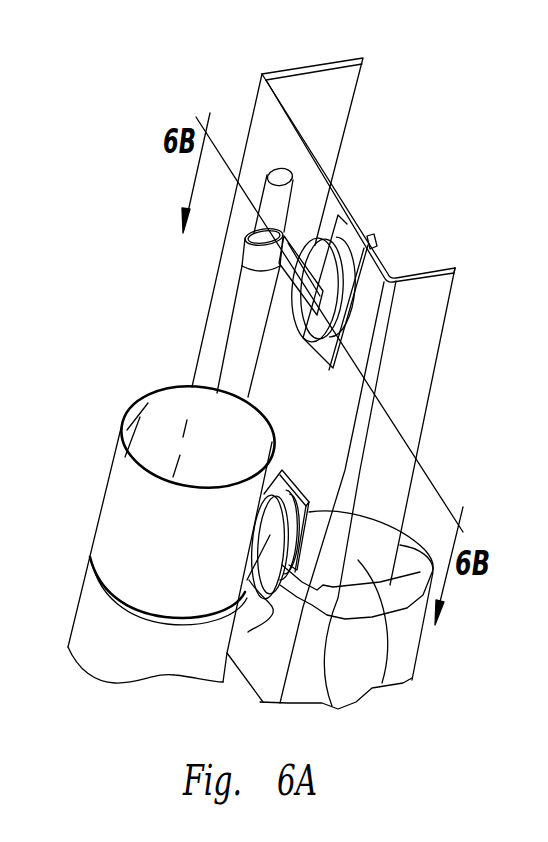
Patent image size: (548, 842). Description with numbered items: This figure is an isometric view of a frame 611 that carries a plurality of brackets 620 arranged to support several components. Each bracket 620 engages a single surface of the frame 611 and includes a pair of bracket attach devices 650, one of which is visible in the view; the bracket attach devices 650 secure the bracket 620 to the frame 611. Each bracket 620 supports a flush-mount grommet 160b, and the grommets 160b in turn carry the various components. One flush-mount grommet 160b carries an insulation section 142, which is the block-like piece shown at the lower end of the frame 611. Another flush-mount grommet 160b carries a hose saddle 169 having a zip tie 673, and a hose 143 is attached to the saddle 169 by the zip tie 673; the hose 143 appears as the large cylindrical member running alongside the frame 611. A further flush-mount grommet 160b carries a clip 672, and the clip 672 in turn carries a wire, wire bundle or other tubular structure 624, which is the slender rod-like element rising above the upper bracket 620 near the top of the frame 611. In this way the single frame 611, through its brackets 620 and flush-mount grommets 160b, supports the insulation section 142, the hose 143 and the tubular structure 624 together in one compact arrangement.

The frame 611 is at (252, 107).
The tubular structure 624 is at (283, 200).
The bracket 620 is at (338, 217).
The bracket attach device 650 is at (374, 242).
The clip 672 is at (243, 246).
The flush-mount grommet 160b is at (347, 323).
The hose 143 is at (121, 438).
The zip tie 673 is at (115, 585).
The hose saddle 169 is at (248, 632).
The insulation section 142 is at (385, 690).